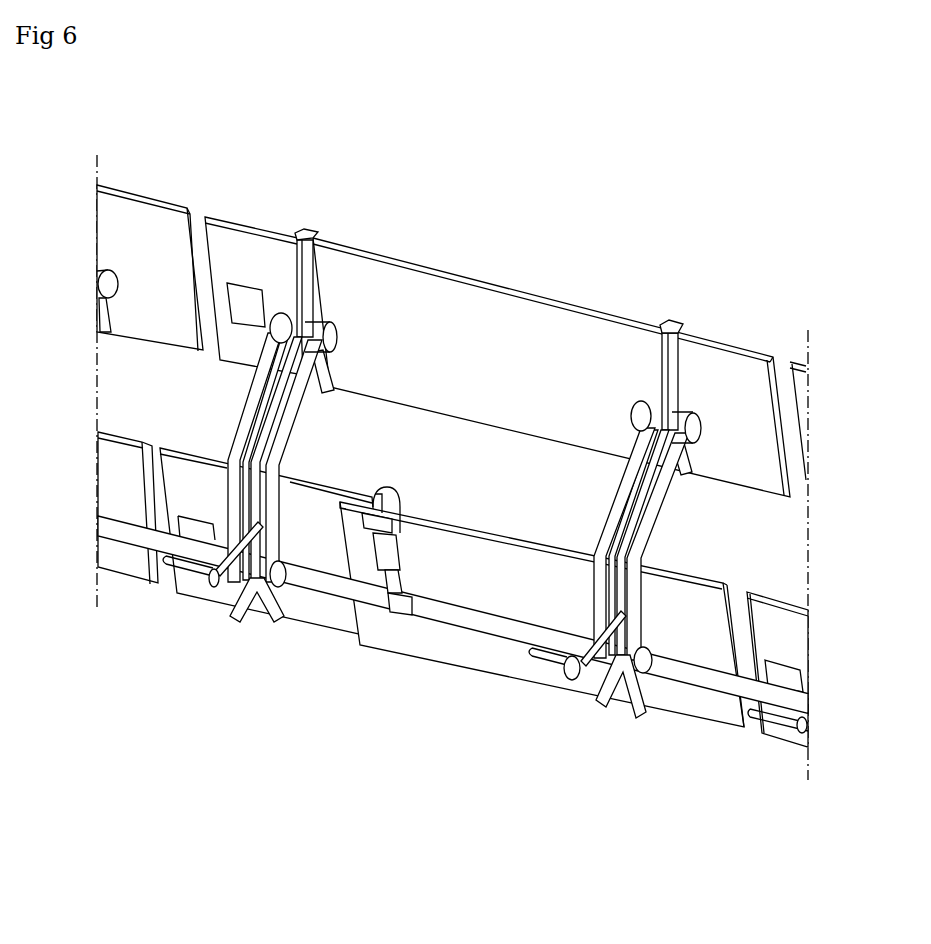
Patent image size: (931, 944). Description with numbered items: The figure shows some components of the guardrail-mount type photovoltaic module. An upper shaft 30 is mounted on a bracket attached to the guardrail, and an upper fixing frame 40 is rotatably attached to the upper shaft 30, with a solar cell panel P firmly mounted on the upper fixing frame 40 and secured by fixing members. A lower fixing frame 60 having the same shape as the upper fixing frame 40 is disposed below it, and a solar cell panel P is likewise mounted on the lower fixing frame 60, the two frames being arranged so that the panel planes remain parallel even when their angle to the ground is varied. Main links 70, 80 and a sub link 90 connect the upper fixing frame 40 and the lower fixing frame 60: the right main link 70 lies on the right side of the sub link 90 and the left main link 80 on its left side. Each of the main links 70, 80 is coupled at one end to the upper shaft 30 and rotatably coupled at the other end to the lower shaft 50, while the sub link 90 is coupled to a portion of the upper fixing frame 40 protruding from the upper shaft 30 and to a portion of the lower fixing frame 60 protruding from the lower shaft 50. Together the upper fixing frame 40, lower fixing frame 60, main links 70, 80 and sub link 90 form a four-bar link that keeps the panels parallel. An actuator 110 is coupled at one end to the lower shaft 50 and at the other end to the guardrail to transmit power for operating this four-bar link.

The solar cell panel P is at (444, 300).
The upper shaft 30 is at (703, 430).
The upper fixing frame 40 is at (664, 372).
The lower shaft 50 is at (447, 622).
The lower fixing frame 60 is at (628, 705).
The right main link 70 is at (660, 490).
The left main link 80 is at (612, 503).
The sub link 90 is at (625, 525).
The actuator 110 is at (563, 672).